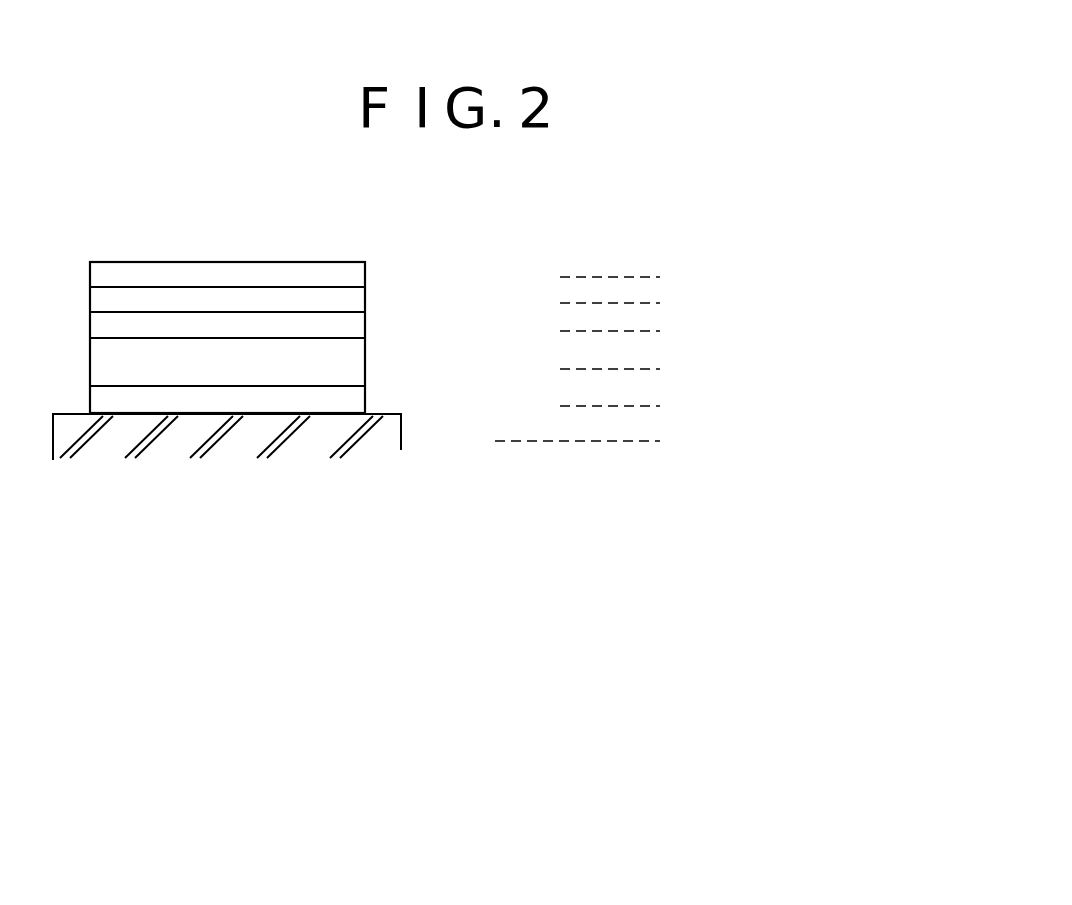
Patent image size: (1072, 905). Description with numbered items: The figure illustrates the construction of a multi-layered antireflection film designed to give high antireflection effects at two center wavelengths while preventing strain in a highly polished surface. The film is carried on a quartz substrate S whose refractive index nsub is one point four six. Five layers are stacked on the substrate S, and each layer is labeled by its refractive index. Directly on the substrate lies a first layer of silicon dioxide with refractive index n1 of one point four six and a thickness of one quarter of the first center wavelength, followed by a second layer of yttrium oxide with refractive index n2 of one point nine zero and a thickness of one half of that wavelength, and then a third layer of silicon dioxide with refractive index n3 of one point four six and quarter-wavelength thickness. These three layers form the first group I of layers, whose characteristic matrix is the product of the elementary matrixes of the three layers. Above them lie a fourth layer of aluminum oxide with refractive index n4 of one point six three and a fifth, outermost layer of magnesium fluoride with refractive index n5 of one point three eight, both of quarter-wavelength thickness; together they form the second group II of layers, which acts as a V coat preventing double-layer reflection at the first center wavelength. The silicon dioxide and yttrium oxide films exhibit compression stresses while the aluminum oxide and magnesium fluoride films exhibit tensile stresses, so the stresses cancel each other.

The substrate S is at (103, 433).
The first group of layers I is at (82, 317).
The second group of layers II is at (83, 260).
The refractive index of first layer n1 is at (372, 403).
The refractive index of second layer n2 is at (372, 363).
The refractive index of third layer n3 is at (372, 326).
The refractive index of fourth layer n4 is at (372, 301).
The refractive index of fifth layer n5 is at (372, 274).
The refractive index of substrate nsub is at (741, 439).